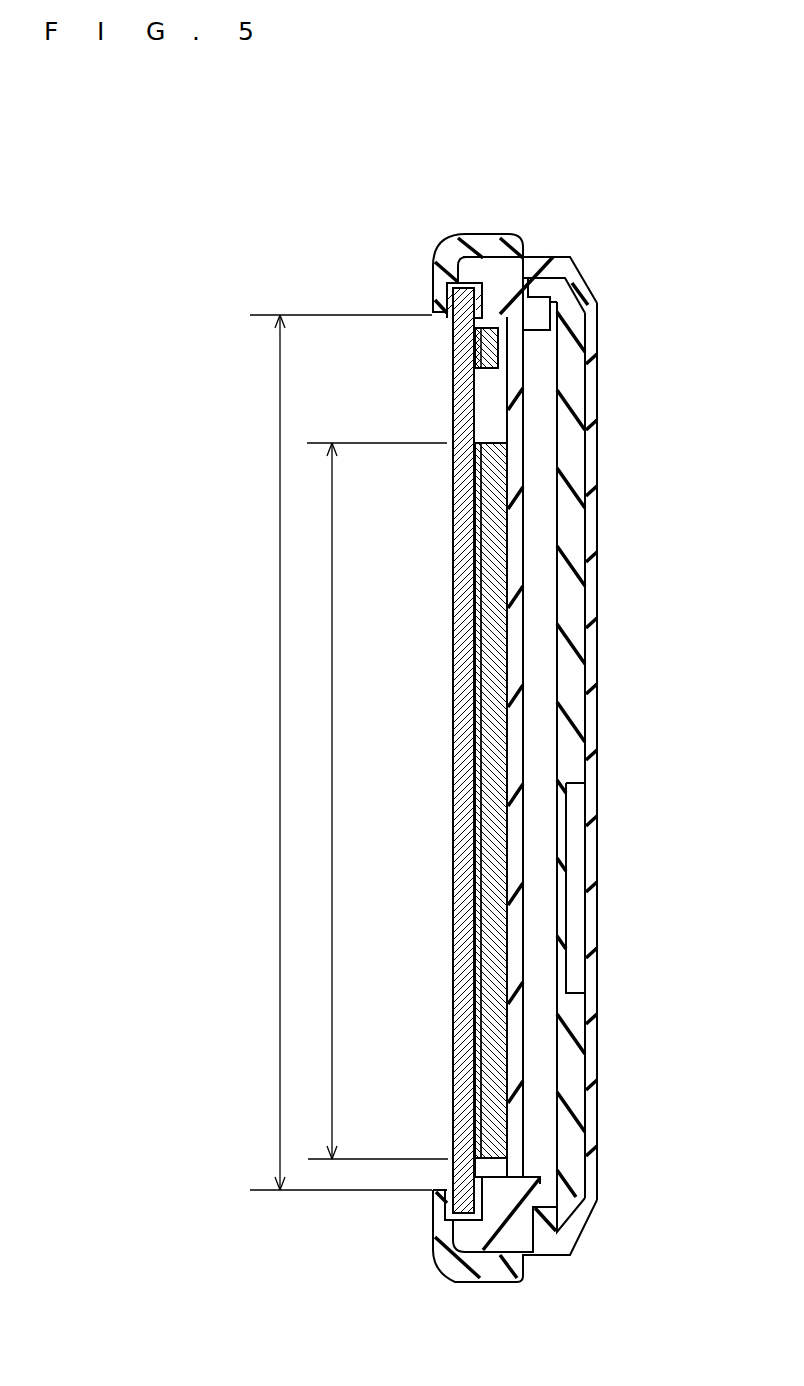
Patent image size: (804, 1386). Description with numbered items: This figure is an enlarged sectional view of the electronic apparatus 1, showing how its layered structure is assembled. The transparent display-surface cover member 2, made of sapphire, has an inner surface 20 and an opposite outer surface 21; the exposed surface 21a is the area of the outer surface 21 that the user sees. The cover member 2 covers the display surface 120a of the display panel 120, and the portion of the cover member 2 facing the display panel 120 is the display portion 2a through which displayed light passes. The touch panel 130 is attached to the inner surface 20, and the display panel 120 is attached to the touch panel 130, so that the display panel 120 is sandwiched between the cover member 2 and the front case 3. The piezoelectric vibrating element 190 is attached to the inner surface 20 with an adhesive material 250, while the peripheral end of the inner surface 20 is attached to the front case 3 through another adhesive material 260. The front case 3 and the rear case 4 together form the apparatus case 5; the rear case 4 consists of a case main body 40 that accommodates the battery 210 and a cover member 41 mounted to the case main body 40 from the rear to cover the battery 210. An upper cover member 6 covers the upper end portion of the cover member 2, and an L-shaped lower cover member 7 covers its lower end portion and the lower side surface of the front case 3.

The electronic apparatus 1 is at (556, 212).
The display-surface cover member 2 is at (462, 700).
The display portion 2a is at (373, 801).
The front case 3 is at (512, 428).
The rear case 4 is at (639, 767).
The apparatus case 5 is at (585, 281).
The upper cover member 6 is at (492, 247).
The lower cover member 7 is at (493, 1268).
The inner surface 20 is at (482, 721).
The outer surface 21 is at (462, 805).
The exposed surface 21a is at (330, 752).
The case main body 40 is at (580, 544).
The cover member 41 is at (593, 510).
The display panel 120 is at (491, 612).
The display surface 120a is at (476, 575).
The touch panel 130 is at (503, 655).
The piezoelectric vibrating element 190 is at (493, 347).
The battery 210 is at (572, 868).
The adhesive material 250 is at (486, 356).
The adhesive material 260 is at (480, 300).